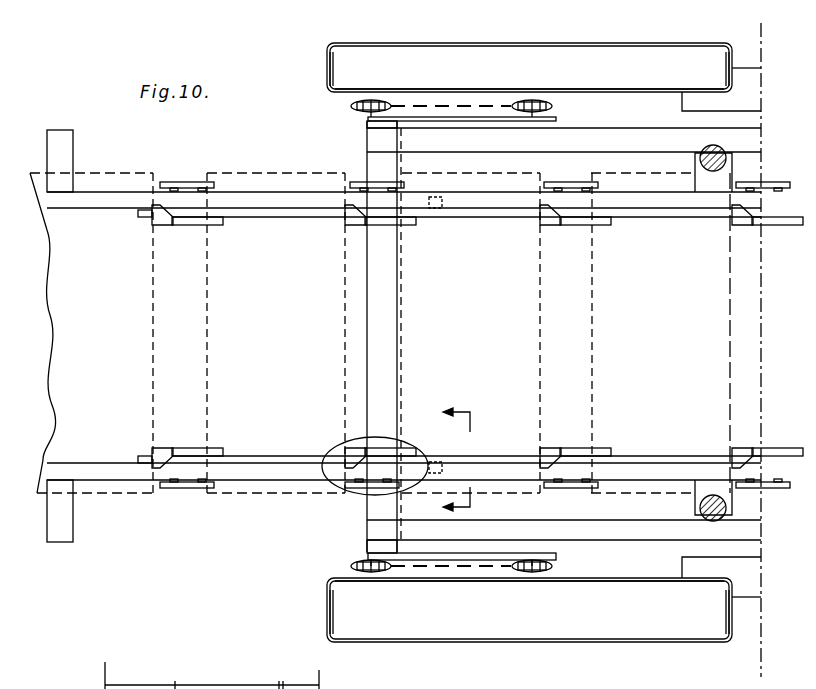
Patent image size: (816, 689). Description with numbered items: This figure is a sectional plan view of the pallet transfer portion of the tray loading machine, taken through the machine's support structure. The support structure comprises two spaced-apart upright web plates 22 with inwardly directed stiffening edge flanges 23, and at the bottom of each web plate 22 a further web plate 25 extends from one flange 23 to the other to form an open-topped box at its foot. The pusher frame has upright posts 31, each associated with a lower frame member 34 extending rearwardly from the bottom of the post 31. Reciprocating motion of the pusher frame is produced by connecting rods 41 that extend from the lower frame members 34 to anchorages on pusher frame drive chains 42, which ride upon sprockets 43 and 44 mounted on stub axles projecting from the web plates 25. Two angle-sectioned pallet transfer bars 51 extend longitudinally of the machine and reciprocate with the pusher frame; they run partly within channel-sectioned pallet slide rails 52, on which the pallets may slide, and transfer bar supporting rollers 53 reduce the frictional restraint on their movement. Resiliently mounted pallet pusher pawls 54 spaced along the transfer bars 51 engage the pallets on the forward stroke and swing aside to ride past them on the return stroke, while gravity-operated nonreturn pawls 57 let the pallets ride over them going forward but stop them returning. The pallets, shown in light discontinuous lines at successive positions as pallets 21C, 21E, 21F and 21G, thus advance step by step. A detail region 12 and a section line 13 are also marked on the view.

The slide mounting assembly (detail) 12 is at (337, 499).
The section line 13 is at (456, 459).
The pallet at the C position 21C is at (661, 329).
The pallet at the E position 21E is at (468, 329).
The pallet at the F position 21F is at (278, 329).
The pallet at the G position 21G is at (104, 329).
The upright web plate 22 is at (540, 44).
The edge flange 23 is at (327, 69).
The further web plate 25 is at (343, 93).
The upright post 31 is at (285, 675).
The lower frame member 34 is at (625, 137).
The connecting rod 41 is at (438, 118).
The pusher frame drive chain 42 is at (412, 104).
The sprocket 43 is at (362, 112).
The sprocket 44 is at (556, 105).
The pallet transfer bar 51 is at (275, 218).
The pallet slide rail 52 is at (100, 200).
The transfer bar supporting roller 53 is at (440, 210).
The pallet pusher pawl 54 is at (165, 222).
The nonreturn pawl 57 is at (174, 182).